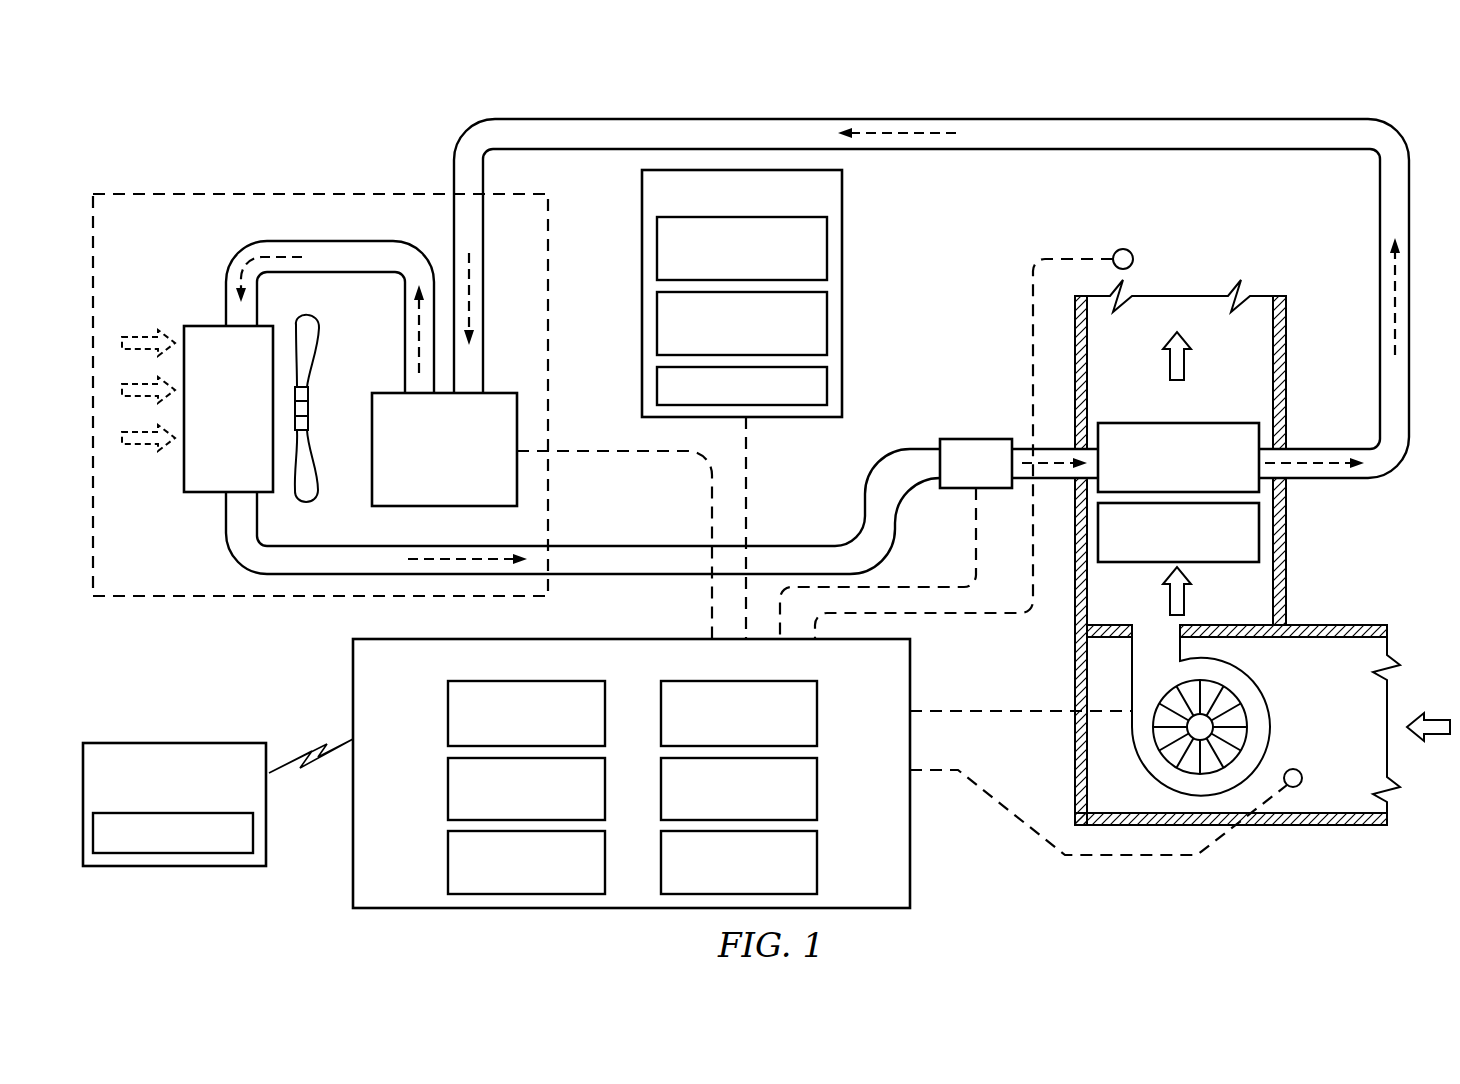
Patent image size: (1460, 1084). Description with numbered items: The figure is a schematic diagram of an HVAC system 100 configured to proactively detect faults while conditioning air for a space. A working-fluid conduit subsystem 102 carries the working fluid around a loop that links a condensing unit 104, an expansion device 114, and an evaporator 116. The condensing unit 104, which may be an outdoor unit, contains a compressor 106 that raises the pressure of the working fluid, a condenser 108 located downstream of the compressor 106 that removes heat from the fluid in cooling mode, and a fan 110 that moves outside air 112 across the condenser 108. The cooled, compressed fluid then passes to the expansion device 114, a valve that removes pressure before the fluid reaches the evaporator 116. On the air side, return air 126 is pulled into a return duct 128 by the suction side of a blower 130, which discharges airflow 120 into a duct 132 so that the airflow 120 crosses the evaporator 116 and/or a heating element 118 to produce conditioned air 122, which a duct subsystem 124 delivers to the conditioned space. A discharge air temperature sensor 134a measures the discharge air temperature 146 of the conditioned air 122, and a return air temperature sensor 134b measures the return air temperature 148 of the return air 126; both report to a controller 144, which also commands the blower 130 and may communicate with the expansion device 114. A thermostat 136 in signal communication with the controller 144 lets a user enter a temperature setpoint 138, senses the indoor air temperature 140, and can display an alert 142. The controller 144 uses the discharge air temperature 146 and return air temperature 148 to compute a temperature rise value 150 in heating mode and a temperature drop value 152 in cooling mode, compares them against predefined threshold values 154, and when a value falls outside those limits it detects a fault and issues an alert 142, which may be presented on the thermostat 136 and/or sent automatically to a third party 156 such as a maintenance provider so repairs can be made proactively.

The HVAC system 100 is at (1228, 62).
The working-fluid conduit subsystem 102 is at (632, 119).
The condensing unit 104 is at (310, 194).
The compressor 106 is at (427, 474).
The condenser 108 is at (184, 475).
The fan 110 is at (320, 340).
The air 112 is at (137, 333).
The expansion device 114 is at (959, 475).
The evaporator 116 is at (1161, 484).
The heating element 118 is at (1161, 552).
The airflow 120 is at (1187, 602).
The conditioned air 122 is at (1187, 368).
The duct subsystem 124 is at (1286, 345).
The return air 126 is at (1430, 742).
The return duct 128 is at (1315, 825).
The blower 130 is at (1258, 686).
The duct 132 is at (1286, 555).
The discharge air temperature sensor 134a is at (1133, 259).
The return air temperature sensor 134b is at (1299, 770).
The thermostat 136 is at (842, 200).
The temperature setpoint 138 is at (827, 245).
The indoor air temperature 140 is at (827, 320).
The alert 142 is at (827, 385).
The controller 144 is at (683, 669).
The discharge air temperature 146 is at (448, 715).
The return air temperature 148 is at (448, 789).
The temperature rise value 150 is at (817, 716).
The temperature drop value 152 is at (817, 790).
The threshold values 154 is at (817, 865).
The third party 156 is at (156, 801).